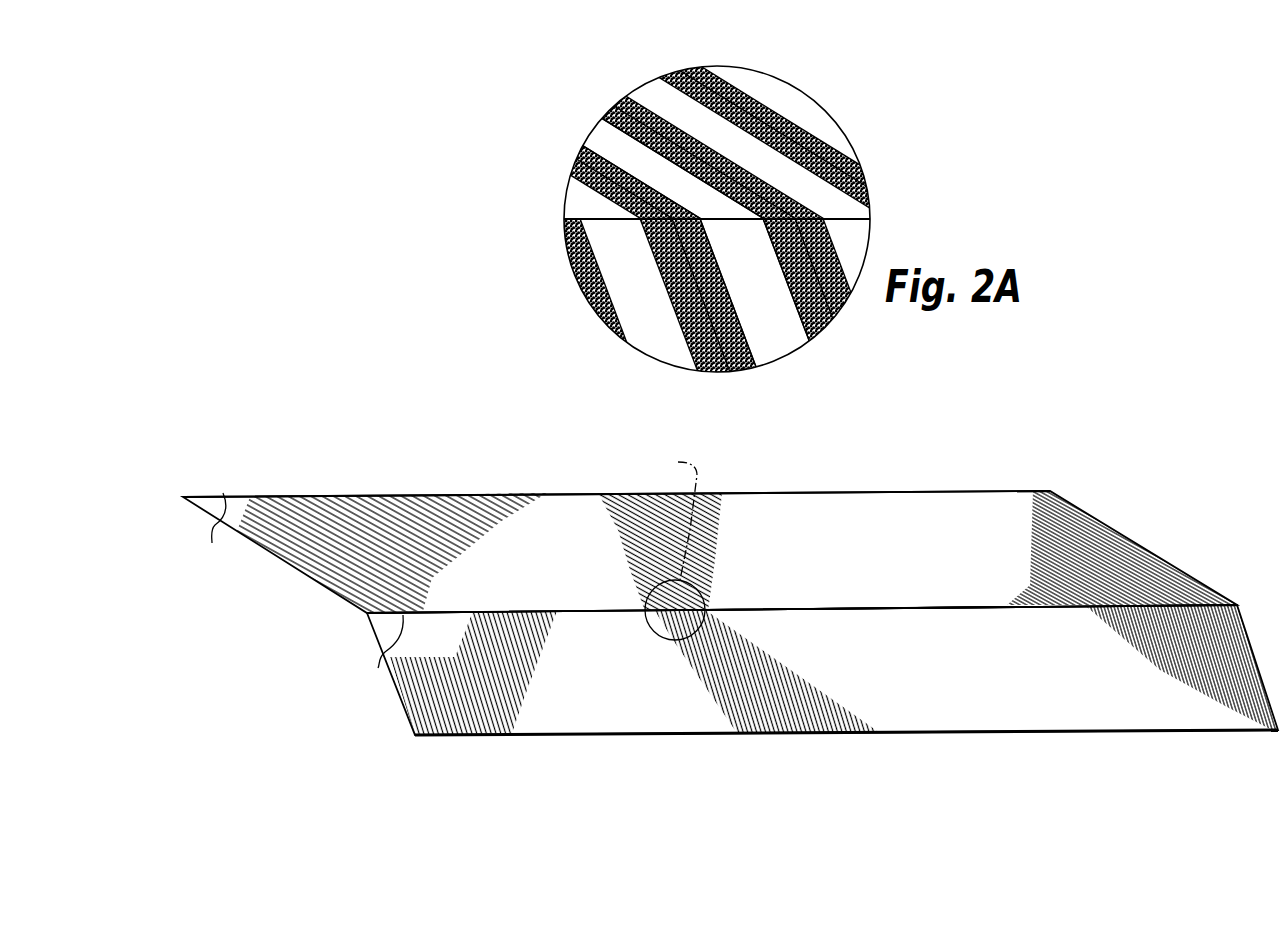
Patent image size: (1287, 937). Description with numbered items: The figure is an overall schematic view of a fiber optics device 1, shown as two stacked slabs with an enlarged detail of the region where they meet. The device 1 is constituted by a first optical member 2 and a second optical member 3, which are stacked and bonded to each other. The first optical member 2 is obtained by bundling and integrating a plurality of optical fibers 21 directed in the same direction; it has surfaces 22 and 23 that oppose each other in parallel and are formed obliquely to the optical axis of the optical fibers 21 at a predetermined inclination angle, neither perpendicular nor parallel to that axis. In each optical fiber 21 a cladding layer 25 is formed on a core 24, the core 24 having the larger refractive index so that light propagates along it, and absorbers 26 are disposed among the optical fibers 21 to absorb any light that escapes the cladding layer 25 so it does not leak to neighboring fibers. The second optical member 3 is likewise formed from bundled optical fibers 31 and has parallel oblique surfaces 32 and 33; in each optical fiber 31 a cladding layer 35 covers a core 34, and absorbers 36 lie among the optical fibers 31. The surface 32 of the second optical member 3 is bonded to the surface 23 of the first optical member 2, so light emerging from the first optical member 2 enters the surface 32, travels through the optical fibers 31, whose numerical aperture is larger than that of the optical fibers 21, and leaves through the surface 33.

In FIG. 2, the fiber optics device 1 is at (1118, 466).
In FIG. 2, the first optical member 2 is at (900, 517).
In FIG. 2, the second optical member 3 is at (1035, 707).
In FIG. 2A, the optical fiber 21 is at (511, 60).
In FIG. 2, the surface 22 is at (403, 497).
In FIG. 2, the surface 23 is at (853, 610).
In FIG. 2A, the core 24 is at (607, 138).
In FIG. 2A, the cladding layer 25 is at (608, 112).
In FIG. 2A, the absorber 26 is at (677, 137).
In FIG. 2A, the optical fiber 31 is at (655, 340).
In FIG. 2, the surface 32 is at (828, 607).
In FIG. 2, the surface 33 is at (447, 740).
In FIG. 2A, the core 34 is at (780, 338).
In FIG. 2A, the cladding layer 35 is at (742, 357).
In FIG. 2A, the absorber 36 is at (703, 368).